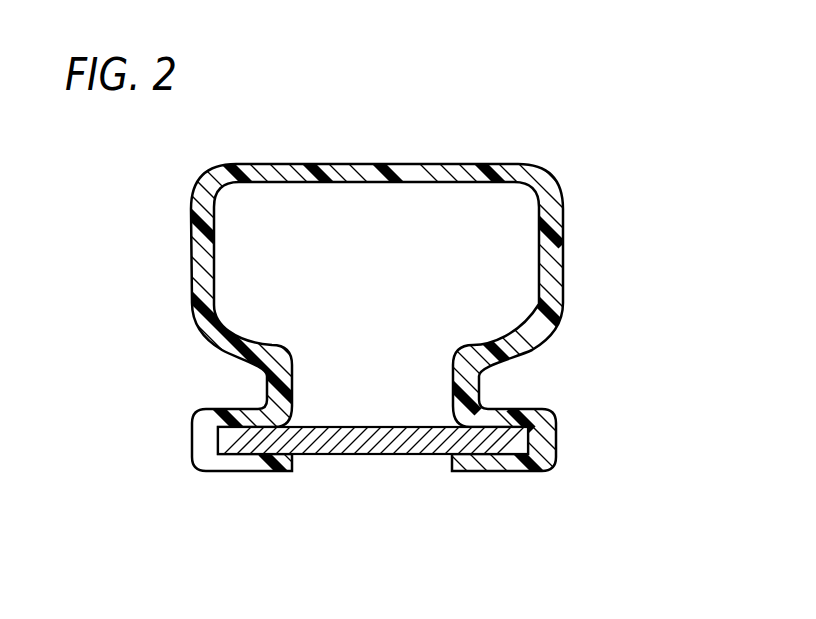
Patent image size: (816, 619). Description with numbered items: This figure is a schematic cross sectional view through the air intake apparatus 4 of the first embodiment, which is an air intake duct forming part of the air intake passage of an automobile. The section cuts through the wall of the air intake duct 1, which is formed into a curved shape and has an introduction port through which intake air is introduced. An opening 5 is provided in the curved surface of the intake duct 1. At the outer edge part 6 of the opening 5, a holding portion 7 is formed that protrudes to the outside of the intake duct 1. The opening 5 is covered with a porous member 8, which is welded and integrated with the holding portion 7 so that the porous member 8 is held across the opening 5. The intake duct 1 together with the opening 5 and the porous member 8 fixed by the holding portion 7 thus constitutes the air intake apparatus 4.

The air intake duct 1 is at (560, 202).
The air intake apparatus 4 is at (148, 300).
The opening 5 is at (433, 398).
The outer edge part 6 is at (268, 484).
The holding portion 7 is at (202, 472).
The porous member 8 is at (388, 456).